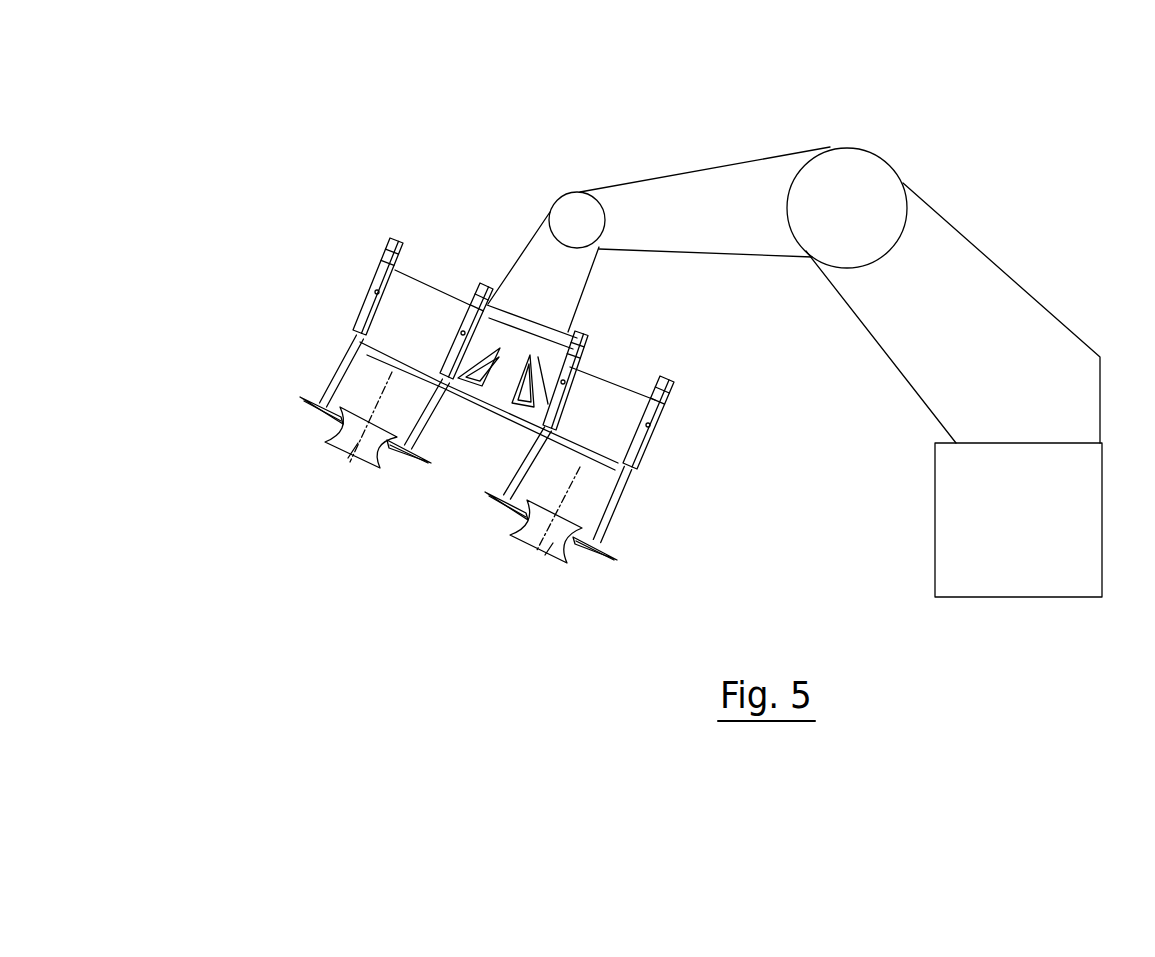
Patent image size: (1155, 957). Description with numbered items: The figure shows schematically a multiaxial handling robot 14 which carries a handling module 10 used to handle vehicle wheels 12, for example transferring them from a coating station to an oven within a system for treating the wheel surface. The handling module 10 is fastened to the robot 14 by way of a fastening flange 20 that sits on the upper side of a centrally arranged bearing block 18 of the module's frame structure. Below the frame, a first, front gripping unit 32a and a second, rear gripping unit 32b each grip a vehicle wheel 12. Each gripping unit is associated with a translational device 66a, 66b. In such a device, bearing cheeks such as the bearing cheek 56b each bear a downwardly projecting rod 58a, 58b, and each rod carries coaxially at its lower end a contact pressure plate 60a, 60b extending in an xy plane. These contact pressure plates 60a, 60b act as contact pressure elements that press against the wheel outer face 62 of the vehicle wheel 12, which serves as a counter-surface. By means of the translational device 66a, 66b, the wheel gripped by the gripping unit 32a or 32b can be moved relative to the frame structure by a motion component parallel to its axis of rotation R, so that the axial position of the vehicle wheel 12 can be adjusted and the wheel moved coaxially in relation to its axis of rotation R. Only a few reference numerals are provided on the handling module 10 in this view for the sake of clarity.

The handling module 10 is at (393, 168).
The vehicle wheel 12 is at (354, 450).
The multiaxial handling robot 14 is at (1021, 284).
The bearing block 18 is at (585, 375).
The fastening flange 20 is at (502, 332).
The first gripping unit 32a is at (296, 484).
The second gripping unit 32b is at (559, 601).
The bearing cheek 56b is at (568, 410).
The rod 58a is at (340, 358).
The rod 58b is at (525, 463).
The contact pressure plate 60a is at (304, 398).
The contact pressure plate 60b is at (490, 494).
The wheel outer face 62 is at (335, 458).
The translational device 66a is at (368, 493).
The translational device 66b is at (640, 553).
The axis of rotation R is at (343, 347).